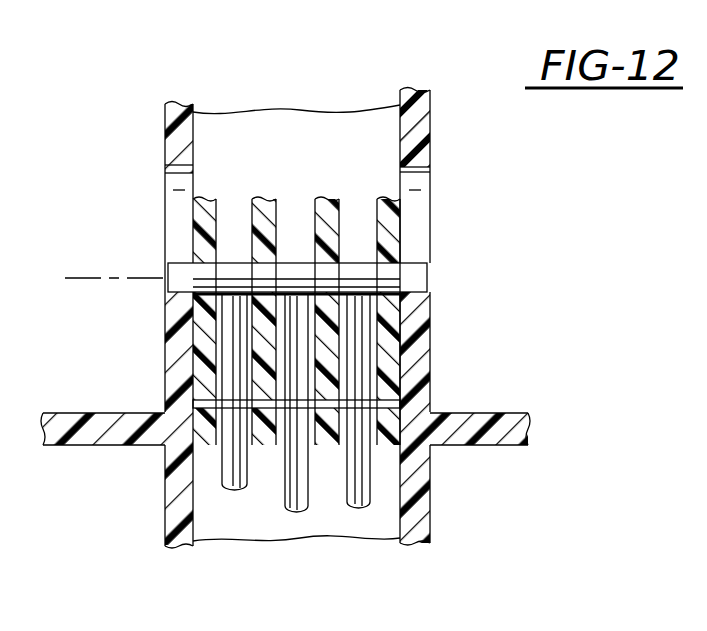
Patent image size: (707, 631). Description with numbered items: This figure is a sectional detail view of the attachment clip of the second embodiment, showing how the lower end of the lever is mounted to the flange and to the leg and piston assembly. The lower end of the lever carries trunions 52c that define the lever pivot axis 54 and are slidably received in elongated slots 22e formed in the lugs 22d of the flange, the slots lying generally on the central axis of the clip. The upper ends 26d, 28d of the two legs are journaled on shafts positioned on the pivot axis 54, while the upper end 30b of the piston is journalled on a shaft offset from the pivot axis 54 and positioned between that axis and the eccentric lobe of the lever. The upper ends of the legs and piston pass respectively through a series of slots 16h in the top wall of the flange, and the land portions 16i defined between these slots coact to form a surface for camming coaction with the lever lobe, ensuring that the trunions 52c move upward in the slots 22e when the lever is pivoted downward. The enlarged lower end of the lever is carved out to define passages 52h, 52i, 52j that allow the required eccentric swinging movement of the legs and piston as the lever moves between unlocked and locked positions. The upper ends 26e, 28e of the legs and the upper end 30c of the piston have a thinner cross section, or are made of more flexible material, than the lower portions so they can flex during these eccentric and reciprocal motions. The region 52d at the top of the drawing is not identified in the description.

The slots 16h is at (218, 435).
The land portions 16i is at (250, 445).
The lugs 22d is at (430, 333).
The elongated slots 22e is at (415, 180).
The upper end of leg 26d is at (238, 268).
The upper end of leg 26e is at (230, 383).
The upper end of leg 28d is at (355, 268).
The upper end of leg 28e is at (357, 403).
The upper end of piston 30b is at (295, 268).
The upper end of piston 30c is at (300, 366).
The trunions 52c is at (428, 266).
The retainer upper block 52d is at (386, 107).
The passage 52h is at (215, 358).
The passage 52i is at (305, 410).
The passage 52j is at (400, 303).
The lever pivot axis 54 is at (110, 278).